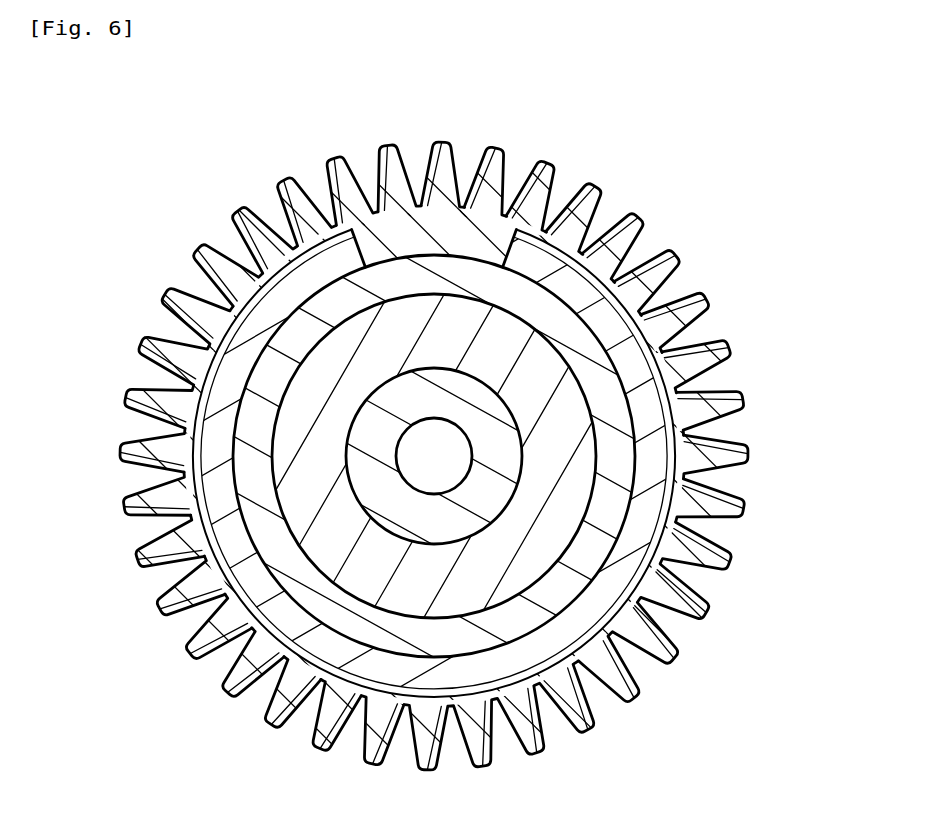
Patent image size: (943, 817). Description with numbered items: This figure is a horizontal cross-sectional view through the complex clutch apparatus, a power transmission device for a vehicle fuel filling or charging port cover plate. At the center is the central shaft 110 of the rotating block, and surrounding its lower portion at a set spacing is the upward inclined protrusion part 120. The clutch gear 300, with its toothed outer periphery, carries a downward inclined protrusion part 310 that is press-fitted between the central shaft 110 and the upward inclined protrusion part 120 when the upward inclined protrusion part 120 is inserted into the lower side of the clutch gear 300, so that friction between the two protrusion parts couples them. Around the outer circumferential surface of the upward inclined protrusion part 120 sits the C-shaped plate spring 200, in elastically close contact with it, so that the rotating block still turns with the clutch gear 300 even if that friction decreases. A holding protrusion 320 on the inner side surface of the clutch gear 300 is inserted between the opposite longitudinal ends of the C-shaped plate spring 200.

The central shaft 110 is at (483, 497).
The upward inclined protrusion part 120 is at (253, 458).
The C-shaped plate spring 200 is at (228, 386).
The clutch gear 300 is at (547, 164).
The downward inclined protrusion part 310 is at (553, 422).
The holding protrusion 320 is at (423, 247).